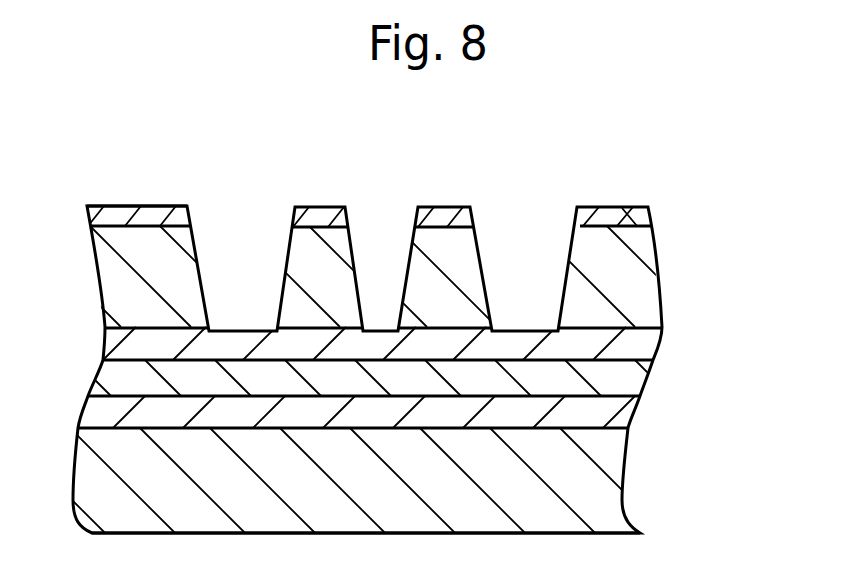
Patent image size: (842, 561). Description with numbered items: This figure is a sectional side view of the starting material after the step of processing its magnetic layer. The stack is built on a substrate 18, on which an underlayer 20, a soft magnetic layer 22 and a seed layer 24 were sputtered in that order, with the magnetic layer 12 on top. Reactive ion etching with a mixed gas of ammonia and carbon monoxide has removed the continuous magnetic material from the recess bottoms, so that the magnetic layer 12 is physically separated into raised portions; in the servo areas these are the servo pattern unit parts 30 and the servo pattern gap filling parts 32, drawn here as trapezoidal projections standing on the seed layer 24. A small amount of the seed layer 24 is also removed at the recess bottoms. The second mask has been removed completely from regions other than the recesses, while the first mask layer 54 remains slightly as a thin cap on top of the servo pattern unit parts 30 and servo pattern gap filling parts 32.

The magnetic layer 12 is at (682, 267).
The substrate 18 is at (623, 462).
The underlayer 20 is at (635, 413).
The soft magnetic layer 22 is at (647, 375).
The seed layer 24 is at (659, 338).
The servo pattern unit parts 30 is at (128, 247).
The servo pattern gap filling parts 32 is at (330, 237).
The first mask layer 54 is at (165, 205).